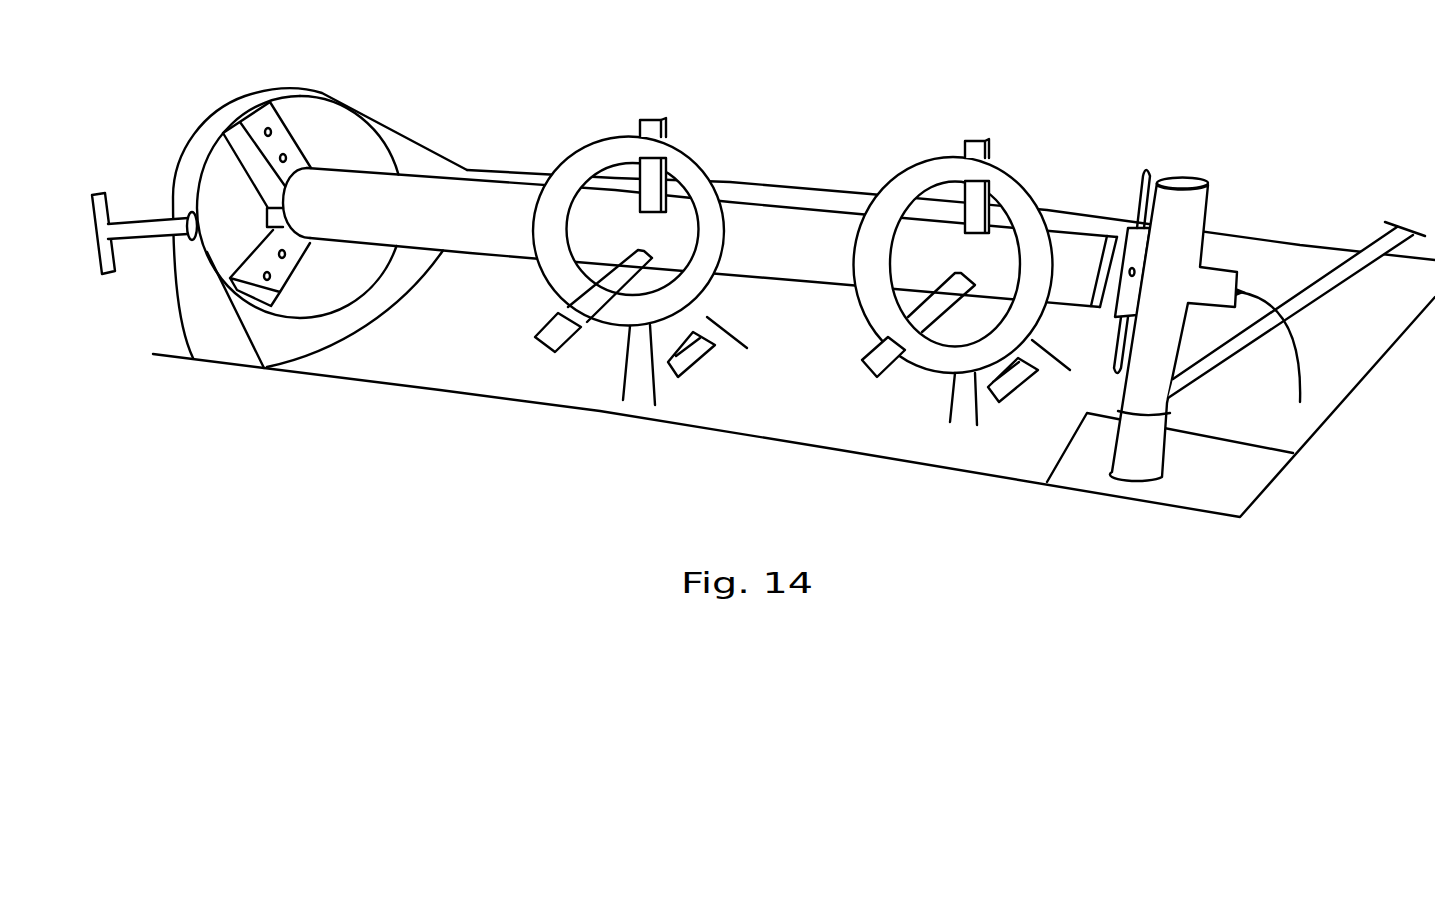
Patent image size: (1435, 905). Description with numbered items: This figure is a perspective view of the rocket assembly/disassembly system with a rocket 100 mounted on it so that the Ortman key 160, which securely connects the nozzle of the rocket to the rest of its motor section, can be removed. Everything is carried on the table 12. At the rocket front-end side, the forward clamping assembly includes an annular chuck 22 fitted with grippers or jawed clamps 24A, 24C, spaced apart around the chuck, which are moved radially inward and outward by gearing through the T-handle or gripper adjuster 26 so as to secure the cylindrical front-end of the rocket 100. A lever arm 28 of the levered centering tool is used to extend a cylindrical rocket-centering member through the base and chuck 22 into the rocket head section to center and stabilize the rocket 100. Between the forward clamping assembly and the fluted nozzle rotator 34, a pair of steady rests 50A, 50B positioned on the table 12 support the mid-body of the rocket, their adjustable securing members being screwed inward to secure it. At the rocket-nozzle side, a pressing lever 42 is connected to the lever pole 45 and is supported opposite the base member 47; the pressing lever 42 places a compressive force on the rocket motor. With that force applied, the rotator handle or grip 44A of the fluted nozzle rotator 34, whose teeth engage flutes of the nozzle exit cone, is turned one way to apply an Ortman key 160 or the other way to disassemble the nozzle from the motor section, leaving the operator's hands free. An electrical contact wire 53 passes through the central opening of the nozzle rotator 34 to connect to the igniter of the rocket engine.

The table 12 is at (552, 387).
The annular chuck 22 is at (190, 282).
The jawed clamp 24A is at (283, 145).
The jawed clamp 24C is at (270, 290).
The T-handle or gripper adjuster 26 is at (142, 224).
The lever arm 28 is at (267, 343).
The fluted nozzle rotator 34 is at (1130, 235).
The pressing lever 42 is at (1380, 243).
The rotator handle or grip 44A is at (1147, 172).
The lever pole 45 is at (1198, 212).
The base member 47 is at (1217, 488).
The steady rest 50A is at (1010, 183).
The steady rest 50B is at (683, 163).
The electrical contact wire 53 is at (1298, 351).
The rocket 100 is at (440, 224).
The Ortman key 160 is at (1100, 297).